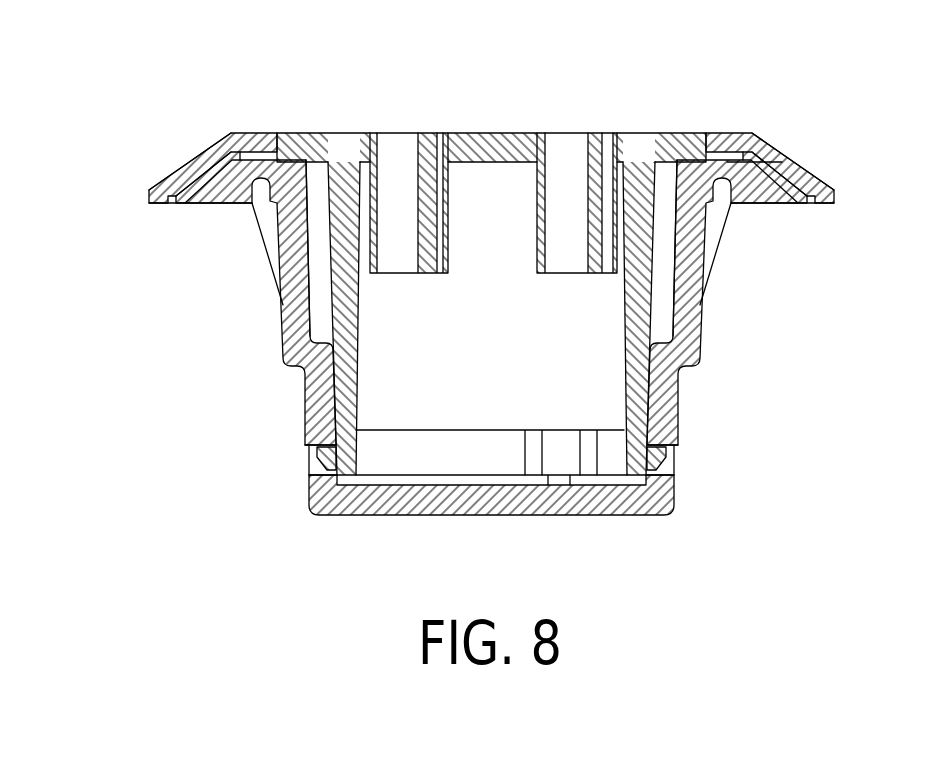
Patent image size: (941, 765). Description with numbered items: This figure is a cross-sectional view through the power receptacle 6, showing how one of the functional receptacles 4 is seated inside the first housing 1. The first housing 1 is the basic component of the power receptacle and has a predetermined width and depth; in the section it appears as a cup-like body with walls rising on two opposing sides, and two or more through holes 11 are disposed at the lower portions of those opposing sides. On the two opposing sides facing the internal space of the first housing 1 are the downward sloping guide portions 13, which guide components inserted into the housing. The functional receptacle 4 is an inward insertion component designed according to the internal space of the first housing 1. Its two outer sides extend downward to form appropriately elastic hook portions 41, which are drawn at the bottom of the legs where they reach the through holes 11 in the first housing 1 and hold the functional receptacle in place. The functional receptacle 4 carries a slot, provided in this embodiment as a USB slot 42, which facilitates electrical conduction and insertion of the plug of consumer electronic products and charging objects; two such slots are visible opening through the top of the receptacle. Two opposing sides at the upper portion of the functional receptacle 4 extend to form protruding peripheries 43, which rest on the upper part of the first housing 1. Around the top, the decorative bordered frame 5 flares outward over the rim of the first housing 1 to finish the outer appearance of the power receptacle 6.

The first housing 1 is at (490, 290).
The functional receptacle 4 is at (495, 256).
The decorative bordered frame 5 is at (787, 166).
The power receptacle 6 is at (530, 276).
The through hole 11 is at (667, 474).
The downward sloping guide portion 13 is at (664, 272).
The hook portion 41 is at (667, 453).
The USB slot 42 is at (568, 158).
The protruding periphery 43 is at (663, 147).